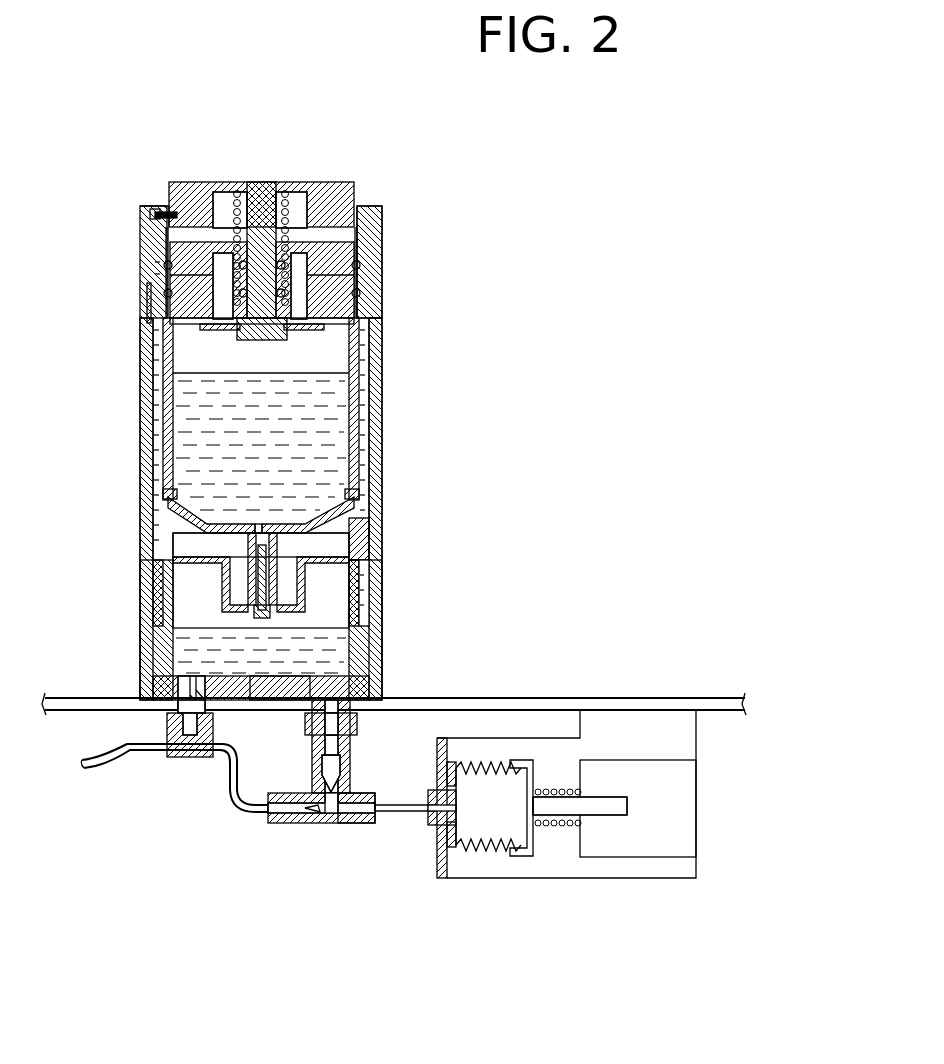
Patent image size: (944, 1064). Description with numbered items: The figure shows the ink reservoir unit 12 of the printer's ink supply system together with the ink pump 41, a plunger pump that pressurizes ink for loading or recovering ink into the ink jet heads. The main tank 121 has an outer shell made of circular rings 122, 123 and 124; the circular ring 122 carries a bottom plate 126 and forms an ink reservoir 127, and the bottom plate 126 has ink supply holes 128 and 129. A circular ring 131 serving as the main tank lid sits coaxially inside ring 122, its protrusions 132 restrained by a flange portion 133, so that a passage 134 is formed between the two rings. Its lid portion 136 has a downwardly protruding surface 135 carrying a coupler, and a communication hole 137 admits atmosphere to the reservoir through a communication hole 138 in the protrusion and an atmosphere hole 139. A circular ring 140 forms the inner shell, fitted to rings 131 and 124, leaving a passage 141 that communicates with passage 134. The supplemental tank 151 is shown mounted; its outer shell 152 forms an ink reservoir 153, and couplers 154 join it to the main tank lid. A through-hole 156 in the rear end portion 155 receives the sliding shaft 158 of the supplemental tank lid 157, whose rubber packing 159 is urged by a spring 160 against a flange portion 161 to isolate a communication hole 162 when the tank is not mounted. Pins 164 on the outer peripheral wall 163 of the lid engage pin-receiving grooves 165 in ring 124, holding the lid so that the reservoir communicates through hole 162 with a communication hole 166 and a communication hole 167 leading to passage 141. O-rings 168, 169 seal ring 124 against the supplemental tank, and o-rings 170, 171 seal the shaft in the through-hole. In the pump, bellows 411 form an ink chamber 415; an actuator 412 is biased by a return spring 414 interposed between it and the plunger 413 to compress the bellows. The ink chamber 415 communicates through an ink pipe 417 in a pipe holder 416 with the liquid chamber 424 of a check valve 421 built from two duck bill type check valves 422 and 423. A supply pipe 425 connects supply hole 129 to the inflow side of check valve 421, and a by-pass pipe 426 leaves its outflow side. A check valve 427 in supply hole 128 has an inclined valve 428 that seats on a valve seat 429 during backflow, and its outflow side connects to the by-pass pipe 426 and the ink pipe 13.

The ink reservoir unit 12 is at (275, 165).
The ink pipe 13 is at (105, 770).
The ink pump 41 is at (556, 958).
The main tank 121 is at (392, 459).
The circular ring 122 is at (378, 622).
The circular ring 123 is at (382, 404).
The circular ring 124 is at (366, 214).
The bottom plate 126 is at (250, 696).
The ink reservoir 127 is at (170, 648).
The ink supply hole 128 is at (175, 680).
The ink supply hole 129 is at (352, 678).
The circular ring 131 is at (155, 605).
The protrusion 132 is at (360, 538).
The flange portion 133 is at (368, 566).
The passage 134 is at (248, 565).
The downwardly protruding surface 135 is at (283, 618).
The lid portion 136 is at (296, 525).
The communication hole 137 is at (362, 515).
The communication hole 138 is at (360, 548).
The atmosphere hole 139 is at (370, 557).
The circular ring 140 is at (355, 432).
The passage 141 is at (152, 388).
The supplemental tank 151 is at (200, 456).
The outer shell 152 is at (368, 352).
The ink reservoir 153 is at (365, 336).
The coupler 154 is at (252, 552).
The rear end portion 155 is at (382, 232).
The through-hole 156 is at (224, 200).
The supplemental tank lid 157 is at (297, 182).
The sliding shaft 158 is at (256, 342).
The rubber packing 159 is at (301, 342).
The spring 160 is at (244, 210).
The flange portion 161 is at (209, 345).
The communication hole 162 is at (195, 268).
The outer peripheral wall 163 is at (160, 205).
The pin 164 is at (170, 210).
The pin-receiving groove 165 is at (158, 212).
The communication hole 166 is at (150, 283).
The communication hole 167 is at (152, 300).
The o-ring 168 is at (330, 256).
The o-ring 169 is at (345, 292).
The o-ring 170 is at (296, 262).
The o-ring 171 is at (300, 285).
The bellows 411 is at (495, 850).
The actuator 412 is at (520, 852).
The plunger 413 is at (668, 843).
The return spring 414 is at (570, 836).
The ink chamber 415 is at (458, 848).
The pipe holder 416 is at (440, 834).
The ink pipe 417 is at (416, 813).
The check valve 421 is at (352, 770).
The duck bill type check valve 422 is at (322, 780).
The duck bill type check valve 423 is at (307, 824).
The liquid chamber 424 is at (341, 824).
The supply pipe 425 is at (312, 730).
The by-pass pipe 426 is at (228, 798).
The check valve 427 is at (166, 735).
The valve 428 is at (205, 690).
The valve seat 429 is at (182, 692).